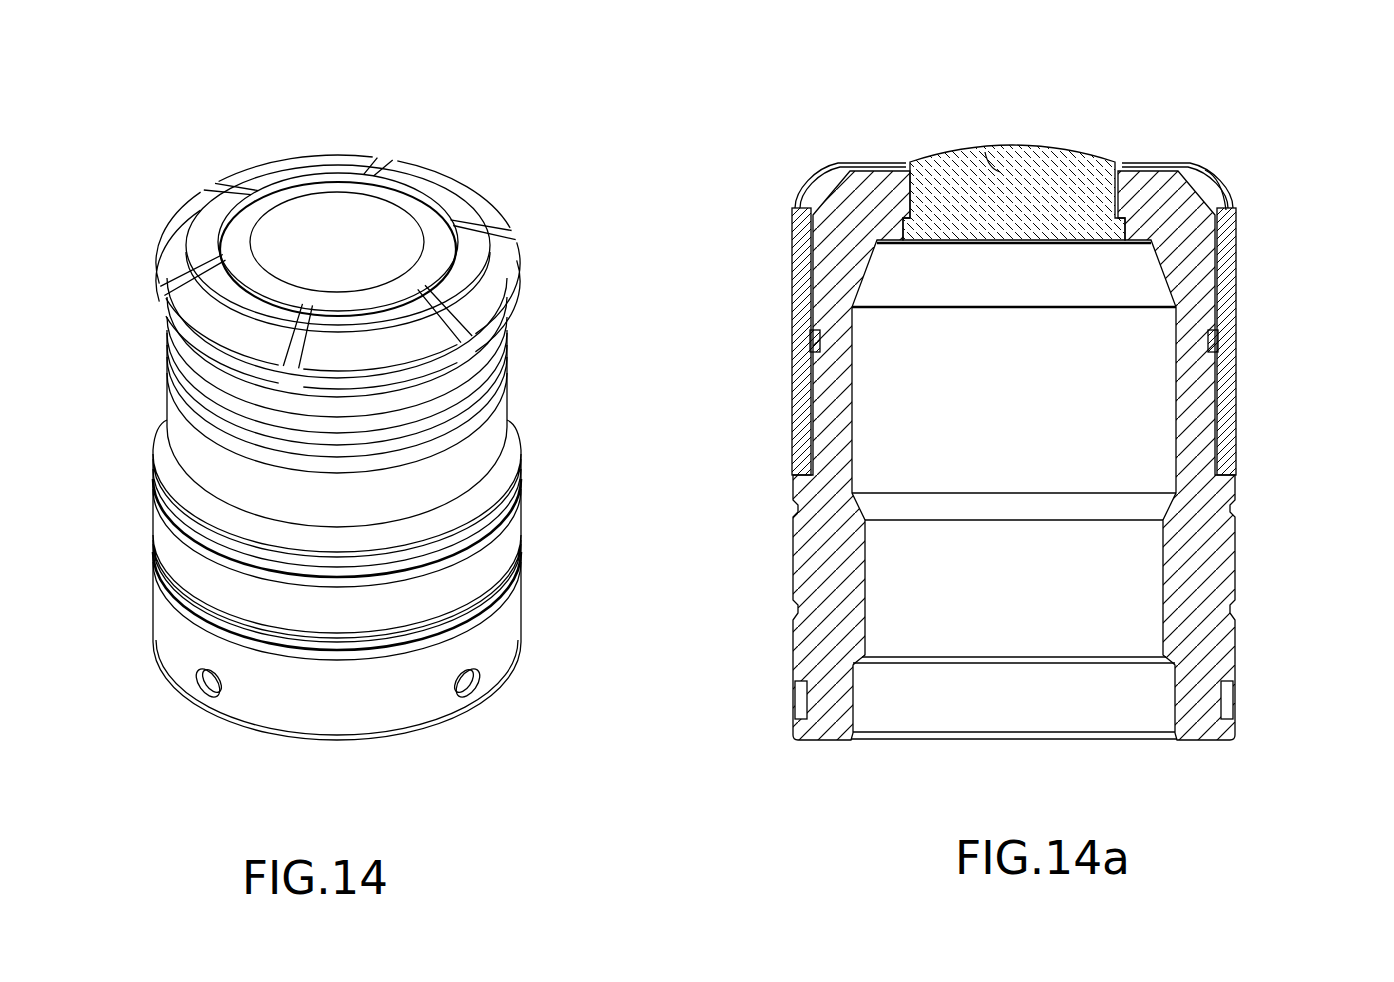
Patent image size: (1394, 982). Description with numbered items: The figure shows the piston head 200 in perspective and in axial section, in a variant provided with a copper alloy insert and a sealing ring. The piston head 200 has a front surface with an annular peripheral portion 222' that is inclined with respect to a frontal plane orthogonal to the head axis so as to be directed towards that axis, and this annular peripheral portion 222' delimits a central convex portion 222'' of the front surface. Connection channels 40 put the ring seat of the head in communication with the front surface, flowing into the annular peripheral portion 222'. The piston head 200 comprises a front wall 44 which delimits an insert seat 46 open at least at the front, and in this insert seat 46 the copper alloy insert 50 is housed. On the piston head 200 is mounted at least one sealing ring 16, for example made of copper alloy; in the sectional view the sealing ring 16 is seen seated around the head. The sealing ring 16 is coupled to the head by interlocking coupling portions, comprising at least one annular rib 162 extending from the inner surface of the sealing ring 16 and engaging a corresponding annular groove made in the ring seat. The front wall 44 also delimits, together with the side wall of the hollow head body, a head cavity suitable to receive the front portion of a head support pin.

In FIG. 14, the piston head 200 is at (413, 396).
In FIG. 14A, the piston head 200 is at (1015, 382).
In FIG. 14, the connection channels 40 is at (358, 396).
In FIG. 14, the annular peripheral portion 222' is at (464, 168).
In FIG. 14A, the annular peripheral portion 222' is at (1292, 200).
In FIG. 14A, the central convex portion 222'' is at (955, 107).
In FIG. 14A, the insert seat 46 is at (905, 188).
In FIG. 14A, the front wall 44 is at (1165, 168).
In FIG. 14A, the copper alloy insert 50 is at (1030, 190).
In FIG. 14A, the annular rib 162 is at (808, 343).
In FIG. 14A, the sealing ring 16 is at (800, 383).